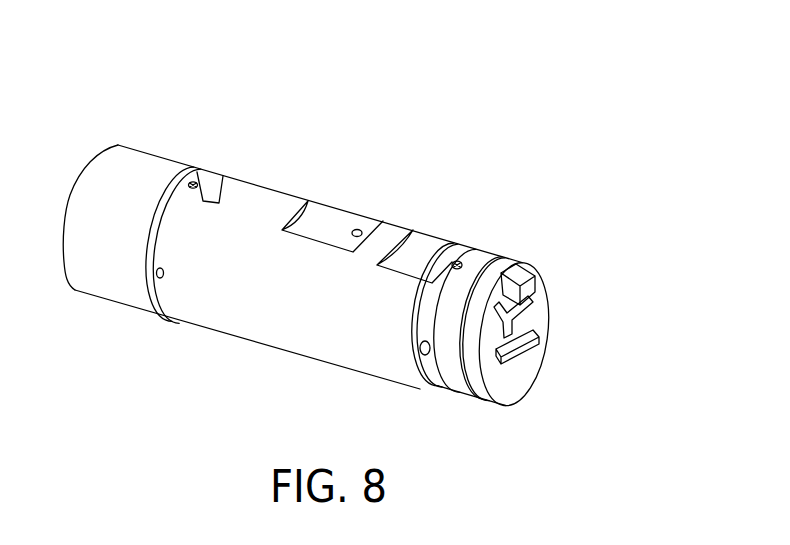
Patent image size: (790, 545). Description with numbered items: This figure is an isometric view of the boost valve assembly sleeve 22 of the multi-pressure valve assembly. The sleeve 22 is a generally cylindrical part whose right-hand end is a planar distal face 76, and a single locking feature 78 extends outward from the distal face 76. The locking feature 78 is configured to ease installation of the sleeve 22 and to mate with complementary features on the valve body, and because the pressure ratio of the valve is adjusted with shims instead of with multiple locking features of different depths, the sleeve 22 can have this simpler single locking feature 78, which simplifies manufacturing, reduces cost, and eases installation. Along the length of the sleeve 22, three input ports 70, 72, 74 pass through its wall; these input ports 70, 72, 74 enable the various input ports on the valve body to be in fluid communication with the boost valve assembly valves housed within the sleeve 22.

The sleeve 22 is at (315, 83).
The input port 70 is at (194, 181).
The input port 72 is at (361, 229).
The input port 74 is at (459, 260).
The distal face 76 is at (595, 352).
The locking feature 78 is at (536, 276).